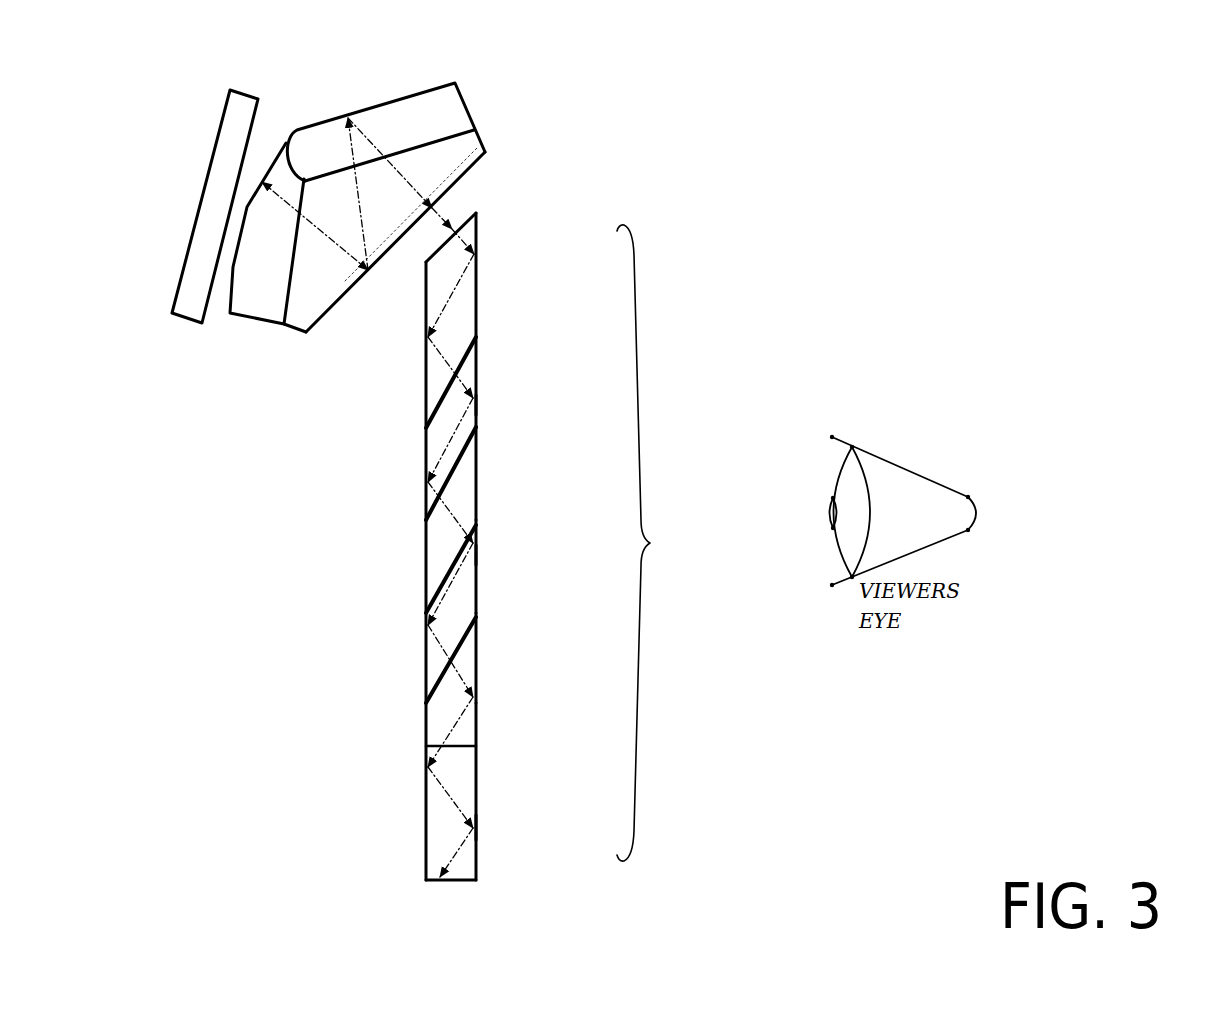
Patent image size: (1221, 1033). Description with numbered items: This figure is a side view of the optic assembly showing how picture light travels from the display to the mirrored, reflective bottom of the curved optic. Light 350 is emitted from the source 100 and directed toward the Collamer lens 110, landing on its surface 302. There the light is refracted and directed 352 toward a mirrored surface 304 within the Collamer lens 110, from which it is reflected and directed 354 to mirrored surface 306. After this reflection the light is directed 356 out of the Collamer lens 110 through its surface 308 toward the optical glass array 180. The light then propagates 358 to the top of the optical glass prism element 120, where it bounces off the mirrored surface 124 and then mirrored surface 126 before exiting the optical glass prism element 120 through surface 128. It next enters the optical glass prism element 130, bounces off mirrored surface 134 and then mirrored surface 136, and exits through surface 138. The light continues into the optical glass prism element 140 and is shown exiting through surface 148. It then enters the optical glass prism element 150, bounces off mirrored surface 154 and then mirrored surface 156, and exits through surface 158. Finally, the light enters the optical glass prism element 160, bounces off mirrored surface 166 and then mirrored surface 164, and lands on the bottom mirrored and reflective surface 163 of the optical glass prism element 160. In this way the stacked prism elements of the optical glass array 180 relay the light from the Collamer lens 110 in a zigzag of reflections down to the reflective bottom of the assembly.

The source 100 is at (192, 229).
The Collamer lens 110 is at (374, 236).
The optical glass prism element 120 is at (421, 400).
The mirrored surface 124 is at (477, 268).
The mirrored surface 126 is at (427, 337).
The surface 128 is at (476, 347).
The optical glass prism element 130 is at (487, 367).
The mirrored surface 134 is at (477, 404).
The mirrored surface 136 is at (427, 482).
The surface 138 is at (460, 467).
The optical glass prism element 140 is at (421, 550).
The surface 148 is at (477, 533).
The mirrored surface 154 is at (477, 555).
The optical glass prism element 150 is at (421, 670).
The mirrored surface 156 is at (427, 625).
The surface 158 is at (450, 662).
The optical glass prism element 160 is at (421, 828).
The bottom mirrored and reflective surface 163 is at (452, 886).
The mirrored surface 164 is at (477, 830).
The mirrored surface 166 is at (426, 772).
The optical glass array 180 is at (698, 566).
The surface 302 is at (273, 66).
The mirrored surface 304 is at (285, 327).
The mirrored surface 306 is at (370, 107).
The surface 308 is at (444, 203).
The light 350 is at (278, 96).
The refracted light direction 352 is at (266, 181).
The reflected light direction 354 is at (362, 217).
The reflected light direction 356 is at (368, 137).
The propagating light path 358 is at (438, 218).